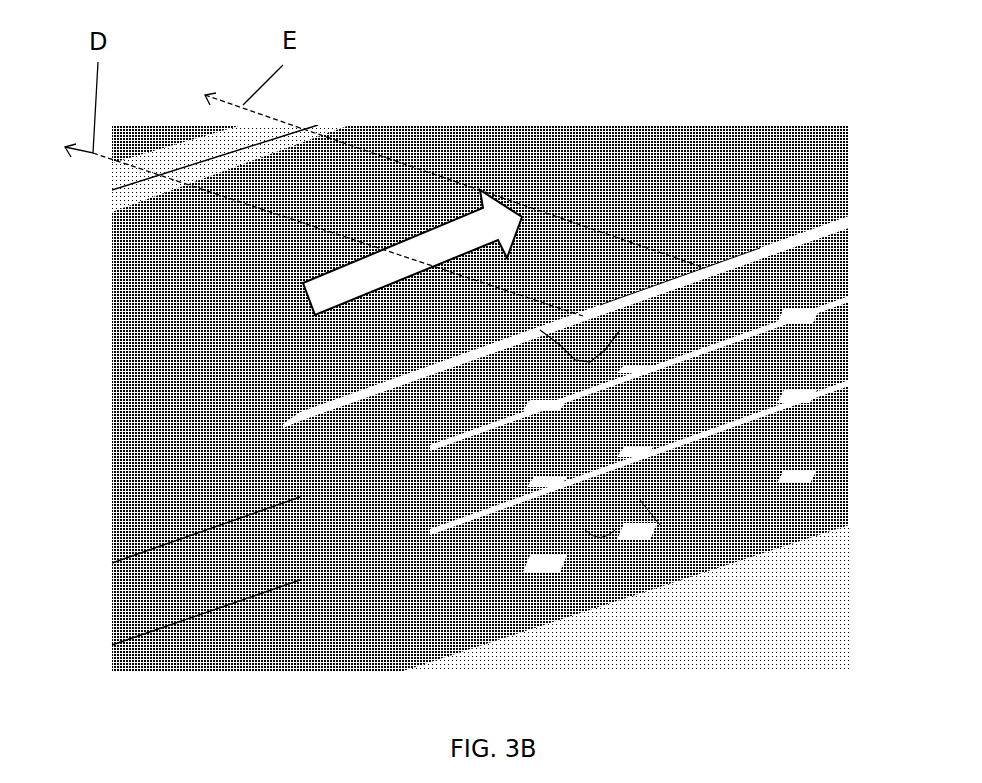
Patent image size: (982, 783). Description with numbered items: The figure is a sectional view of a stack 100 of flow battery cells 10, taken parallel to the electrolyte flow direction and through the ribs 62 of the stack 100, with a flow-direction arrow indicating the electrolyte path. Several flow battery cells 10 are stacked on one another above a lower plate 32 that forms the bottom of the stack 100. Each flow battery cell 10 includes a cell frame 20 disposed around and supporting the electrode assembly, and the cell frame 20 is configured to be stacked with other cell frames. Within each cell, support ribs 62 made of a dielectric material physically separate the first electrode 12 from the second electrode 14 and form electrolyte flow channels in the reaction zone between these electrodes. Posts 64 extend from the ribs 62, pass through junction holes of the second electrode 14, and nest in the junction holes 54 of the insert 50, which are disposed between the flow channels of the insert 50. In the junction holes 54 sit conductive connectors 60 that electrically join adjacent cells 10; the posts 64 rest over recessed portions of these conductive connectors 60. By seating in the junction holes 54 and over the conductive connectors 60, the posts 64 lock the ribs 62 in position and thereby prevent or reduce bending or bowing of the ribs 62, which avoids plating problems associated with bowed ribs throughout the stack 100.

The stack 100 is at (503, 44).
The second electrode 14 is at (568, 174).
The posts 64 is at (587, 337).
The support ribs 62 is at (668, 292).
The insert 50 is at (475, 416).
The cell frame 20 is at (193, 506).
The lower plate 32 is at (526, 617).
The flow battery cell 10 is at (171, 610).
The first electrode 12 is at (233, 597).
The conductive connectors 60 is at (600, 540).
The junction holes 54 is at (648, 512).